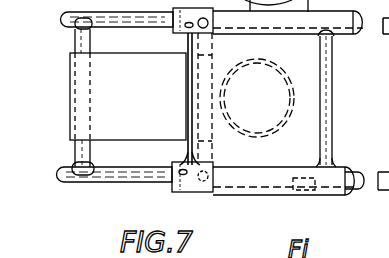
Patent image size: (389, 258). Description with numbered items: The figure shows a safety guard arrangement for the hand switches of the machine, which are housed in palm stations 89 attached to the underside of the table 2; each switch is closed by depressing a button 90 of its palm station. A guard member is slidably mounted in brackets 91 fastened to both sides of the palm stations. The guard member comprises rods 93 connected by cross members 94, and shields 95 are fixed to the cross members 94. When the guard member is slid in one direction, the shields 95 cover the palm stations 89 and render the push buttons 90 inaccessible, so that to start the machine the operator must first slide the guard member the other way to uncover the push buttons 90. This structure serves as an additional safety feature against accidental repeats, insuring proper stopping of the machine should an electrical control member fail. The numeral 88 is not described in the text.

The table 2 is at (388, 134).
The top rail 88 is at (212, 22).
The palm station 89 is at (310, 80).
The button 90 is at (298, 101).
The bracket 91 is at (203, 185).
The rod 93 is at (120, 183).
The cross member 94 is at (77, 147).
The shield 95 is at (128, 96).